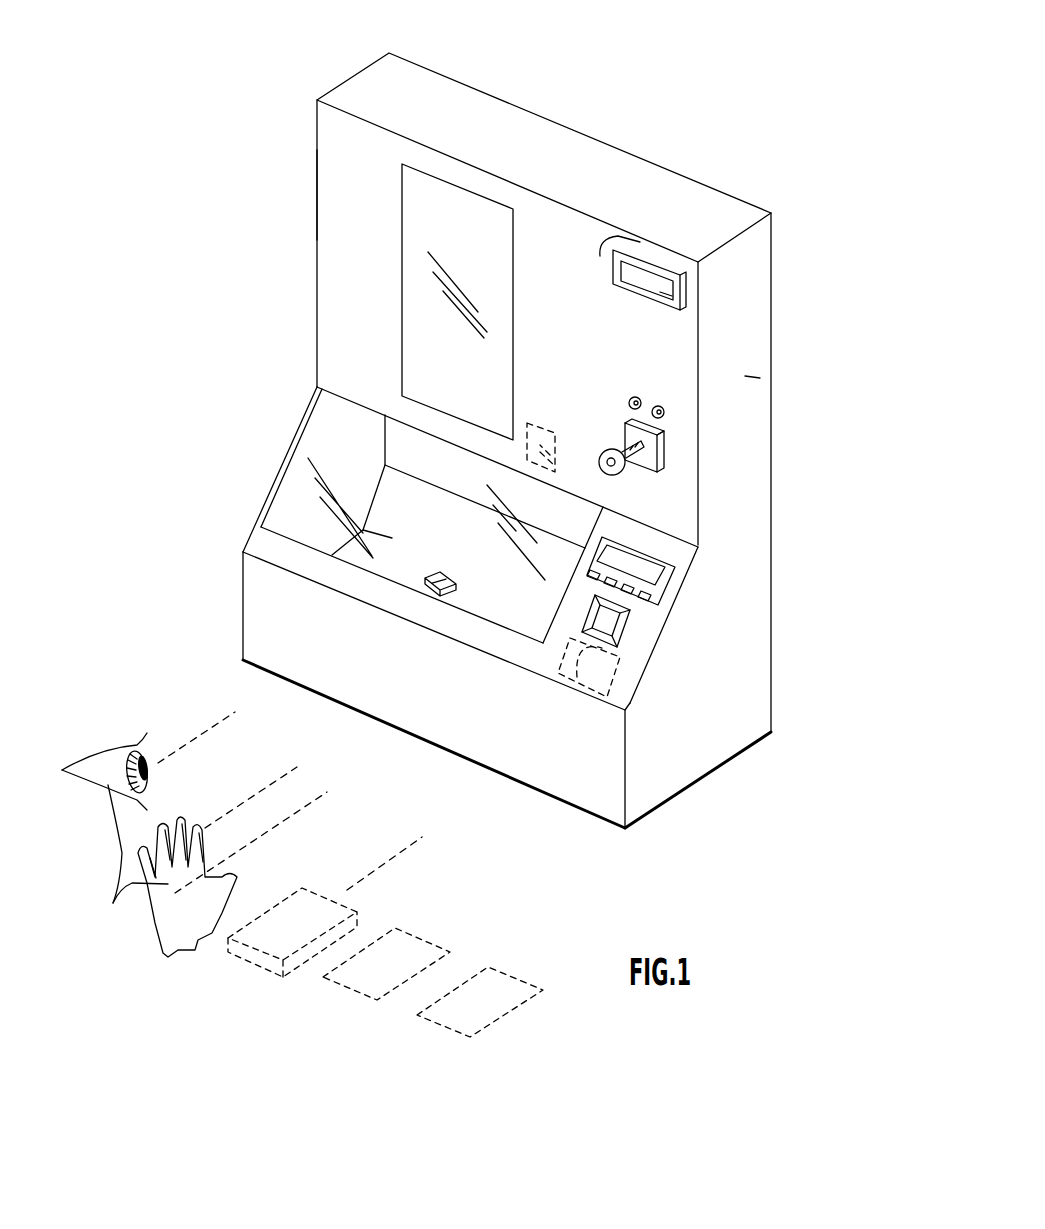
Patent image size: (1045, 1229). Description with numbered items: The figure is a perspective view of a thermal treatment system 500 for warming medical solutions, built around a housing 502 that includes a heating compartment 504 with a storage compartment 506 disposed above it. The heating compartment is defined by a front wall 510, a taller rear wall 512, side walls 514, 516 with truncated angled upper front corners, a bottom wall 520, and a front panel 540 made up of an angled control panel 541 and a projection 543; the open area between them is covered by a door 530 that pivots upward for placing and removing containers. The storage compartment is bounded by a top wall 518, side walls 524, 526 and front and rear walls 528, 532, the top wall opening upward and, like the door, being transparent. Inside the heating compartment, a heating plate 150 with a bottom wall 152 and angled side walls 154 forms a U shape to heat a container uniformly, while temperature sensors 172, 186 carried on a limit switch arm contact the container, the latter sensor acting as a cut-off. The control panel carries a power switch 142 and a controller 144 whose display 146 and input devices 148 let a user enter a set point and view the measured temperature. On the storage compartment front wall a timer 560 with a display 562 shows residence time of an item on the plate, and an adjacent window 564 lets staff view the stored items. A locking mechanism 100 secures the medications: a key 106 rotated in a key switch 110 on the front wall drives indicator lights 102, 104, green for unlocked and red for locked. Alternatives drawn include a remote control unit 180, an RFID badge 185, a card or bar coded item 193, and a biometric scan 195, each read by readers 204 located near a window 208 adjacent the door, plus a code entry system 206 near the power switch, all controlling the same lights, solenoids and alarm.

The thermal treatment system 500 is at (266, 78).
The housing 502 is at (290, 291).
The heating compartment 504 is at (337, 434).
The storage compartment 506 is at (568, 250).
The front wall 510 is at (268, 636).
The rear wall 512 is at (702, 598).
The side wall 514 is at (752, 665).
The side wall 516 is at (242, 585).
The top wall 518 is at (604, 252).
The bottom wall 520 is at (648, 818).
The side wall 524 is at (738, 377).
The side wall 526 is at (314, 190).
The front wall 528 is at (668, 327).
The door 530 is at (297, 522).
The rear wall 532 is at (683, 168).
The front panel 540 is at (650, 645).
The control panel 541 is at (633, 667).
The projection 543 is at (470, 628).
The timer 560 is at (692, 213).
The display 562 is at (671, 290).
The window 564 is at (402, 247).
The locking mechanism 100 is at (592, 441).
The indicator light 102 is at (665, 410).
The indicator light 104 is at (632, 396).
The key 106 is at (618, 475).
The key switch 110 is at (670, 470).
The power switch 142 is at (631, 704).
The controller 144 is at (648, 573).
The display 146 is at (657, 592).
The input devices or buttons 148 is at (700, 606).
The heating plate 150 is at (382, 495).
The bottom wall 152 is at (483, 604).
The side walls 154 is at (385, 533).
The temperature sensor 172 is at (422, 577).
The temperature sensor 186 is at (439, 581).
The remote control unit 180 is at (255, 965).
The RFID key fob or badge 185 is at (330, 982).
The bar coded item 193 is at (532, 998).
The biometric scan 195 is at (242, 834).
The readers 204 is at (546, 453).
The code entry system 206 is at (577, 677).
The window 208 is at (536, 420).